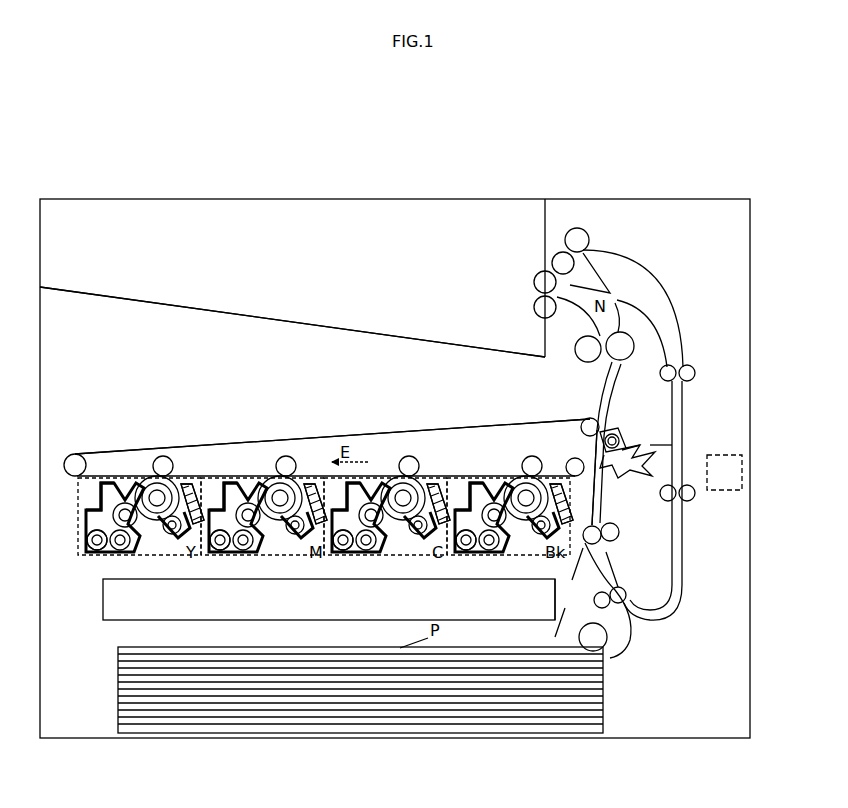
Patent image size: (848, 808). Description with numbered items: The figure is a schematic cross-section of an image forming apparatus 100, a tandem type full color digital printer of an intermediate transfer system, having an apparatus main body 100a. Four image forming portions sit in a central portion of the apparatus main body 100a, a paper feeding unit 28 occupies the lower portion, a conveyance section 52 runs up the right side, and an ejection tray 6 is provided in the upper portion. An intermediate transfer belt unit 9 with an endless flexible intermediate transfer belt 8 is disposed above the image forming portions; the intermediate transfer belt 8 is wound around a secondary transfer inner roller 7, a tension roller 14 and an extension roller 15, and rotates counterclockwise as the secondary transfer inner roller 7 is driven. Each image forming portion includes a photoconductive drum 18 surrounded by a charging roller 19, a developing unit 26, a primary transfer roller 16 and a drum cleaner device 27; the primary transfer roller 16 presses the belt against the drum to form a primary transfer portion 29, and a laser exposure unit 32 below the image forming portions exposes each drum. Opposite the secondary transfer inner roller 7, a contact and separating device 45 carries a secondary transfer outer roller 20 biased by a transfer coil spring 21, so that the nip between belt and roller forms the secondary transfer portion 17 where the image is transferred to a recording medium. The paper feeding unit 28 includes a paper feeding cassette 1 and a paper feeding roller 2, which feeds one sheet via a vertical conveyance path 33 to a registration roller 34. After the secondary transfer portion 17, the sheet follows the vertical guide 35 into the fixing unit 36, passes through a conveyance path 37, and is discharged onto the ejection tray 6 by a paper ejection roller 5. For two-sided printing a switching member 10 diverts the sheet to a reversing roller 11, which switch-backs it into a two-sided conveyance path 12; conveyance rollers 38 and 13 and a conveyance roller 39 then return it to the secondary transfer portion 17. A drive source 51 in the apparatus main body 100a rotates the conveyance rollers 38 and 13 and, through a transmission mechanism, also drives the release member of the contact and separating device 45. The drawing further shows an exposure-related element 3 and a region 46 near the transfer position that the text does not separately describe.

The paper feeding cassette 1 is at (115, 715).
The paper feeding roller 2 is at (620, 637).
The exposure device 3 is at (548, 592).
The paper ejection roller 5 is at (535, 272).
The ejection tray 6 is at (378, 318).
The secondary transfer inner roller 7 is at (582, 422).
The intermediate transfer belt 8 is at (452, 426).
The intermediate transfer belt unit 9 is at (322, 405).
The switching member 10 is at (598, 282).
The reversing roller 11 is at (580, 226).
The two-sided conveyance path 12 is at (652, 280).
The conveyance roller 13 is at (690, 500).
The tension roller 14 is at (75, 454).
The extension roller 15 is at (584, 436).
The primary transfer roller 16 is at (165, 457).
The secondary transfer portion 17 is at (618, 394).
The photoconductive drum 18 is at (140, 482).
The charging roller 19 is at (160, 545).
The secondary transfer outer roller 20 is at (628, 438).
The transfer coil spring 21 is at (652, 445).
The developing unit 26 is at (98, 556).
The drum cleaner device 27 is at (192, 480).
The paper feeding unit 28 is at (571, 592).
The primary transfer portion 29 is at (157, 476).
The laser exposure unit 32 is at (103, 597).
The vertical conveyance path 33 is at (612, 552).
The registration roller 34 is at (616, 507).
The vertical guide 35 is at (604, 382).
The fixing unit 36 is at (575, 347).
The conveyance path 37 is at (534, 307).
The conveyance roller 38 is at (690, 352).
The conveyance roller 39 is at (636, 585).
The contact and separating device 45 is at (645, 462).
The secondary transfer unit 46 is at (627, 470).
The drive source 51 is at (742, 468).
The conveyance section 52 is at (692, 392).
The image forming apparatus 100 is at (360, 185).
The apparatus main body 100a is at (750, 243).